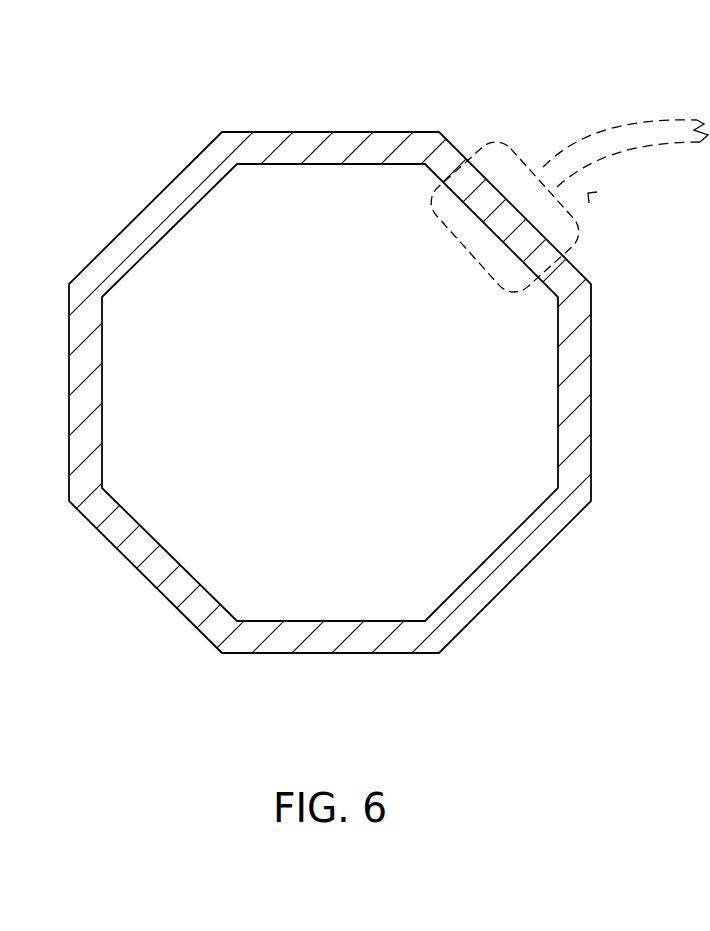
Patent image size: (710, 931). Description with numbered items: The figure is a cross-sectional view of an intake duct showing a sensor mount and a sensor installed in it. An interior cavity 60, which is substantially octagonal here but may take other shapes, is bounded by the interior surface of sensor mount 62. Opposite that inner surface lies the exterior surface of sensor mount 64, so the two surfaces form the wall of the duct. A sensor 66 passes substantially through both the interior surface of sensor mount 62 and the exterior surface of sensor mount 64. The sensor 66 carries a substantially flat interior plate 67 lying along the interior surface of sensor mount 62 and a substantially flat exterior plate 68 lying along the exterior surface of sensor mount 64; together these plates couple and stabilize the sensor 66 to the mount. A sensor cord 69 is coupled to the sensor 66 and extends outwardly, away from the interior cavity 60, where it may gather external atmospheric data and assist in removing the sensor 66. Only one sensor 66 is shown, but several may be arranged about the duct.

The interior cavity 60 is at (355, 392).
The interior surface of sensor mount 62 is at (557, 407).
The exterior surface of sensor mount 64 is at (592, 380).
The sensor 66 is at (588, 193).
The interior plate 67 is at (432, 213).
The exterior plate 68 is at (467, 178).
The sensor cord 69 is at (620, 120).